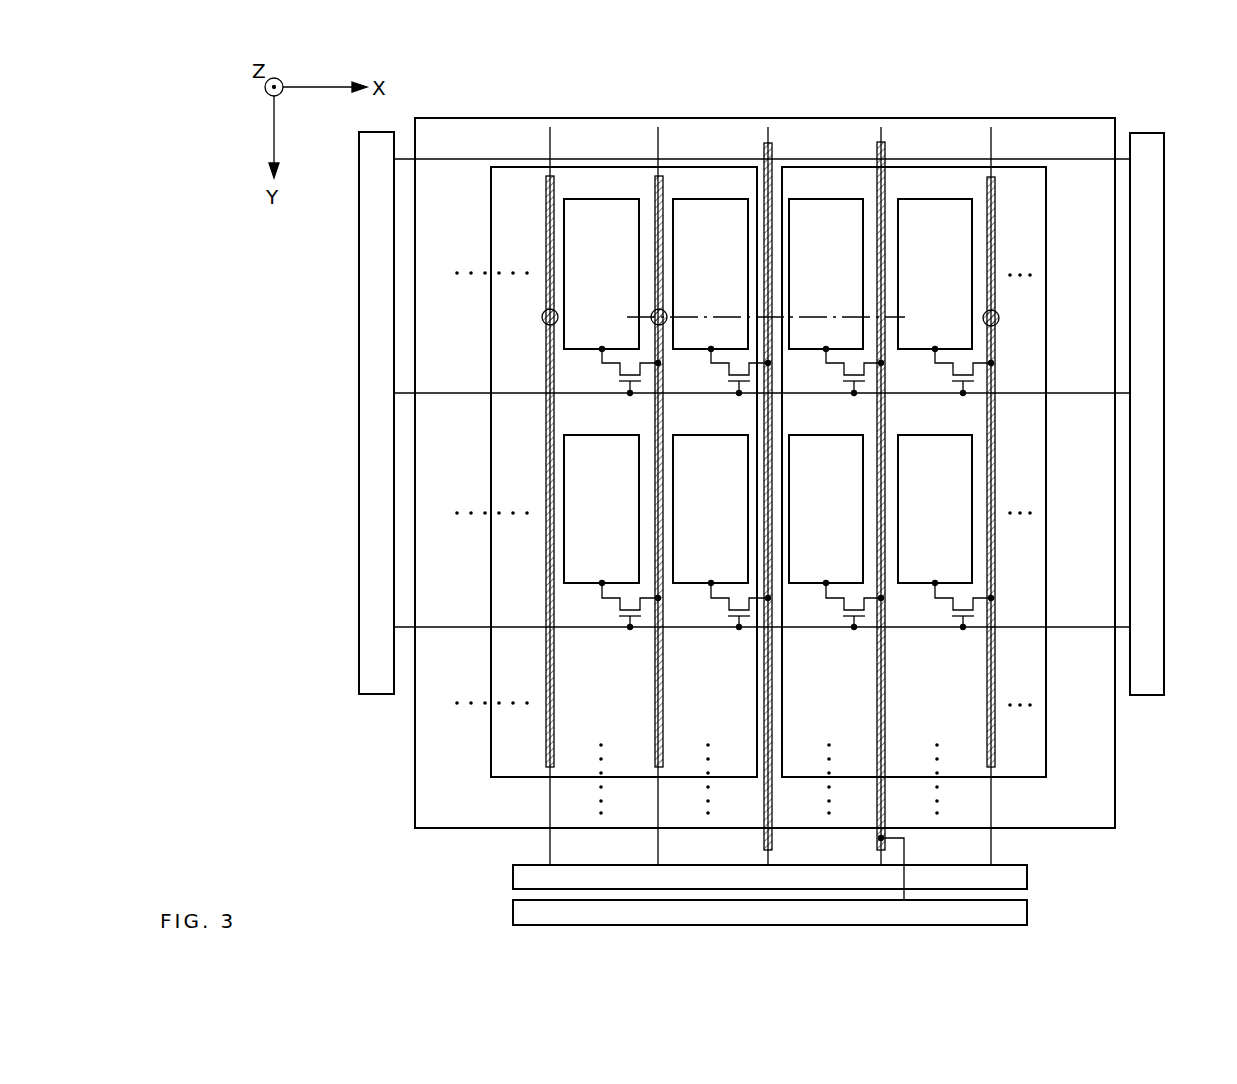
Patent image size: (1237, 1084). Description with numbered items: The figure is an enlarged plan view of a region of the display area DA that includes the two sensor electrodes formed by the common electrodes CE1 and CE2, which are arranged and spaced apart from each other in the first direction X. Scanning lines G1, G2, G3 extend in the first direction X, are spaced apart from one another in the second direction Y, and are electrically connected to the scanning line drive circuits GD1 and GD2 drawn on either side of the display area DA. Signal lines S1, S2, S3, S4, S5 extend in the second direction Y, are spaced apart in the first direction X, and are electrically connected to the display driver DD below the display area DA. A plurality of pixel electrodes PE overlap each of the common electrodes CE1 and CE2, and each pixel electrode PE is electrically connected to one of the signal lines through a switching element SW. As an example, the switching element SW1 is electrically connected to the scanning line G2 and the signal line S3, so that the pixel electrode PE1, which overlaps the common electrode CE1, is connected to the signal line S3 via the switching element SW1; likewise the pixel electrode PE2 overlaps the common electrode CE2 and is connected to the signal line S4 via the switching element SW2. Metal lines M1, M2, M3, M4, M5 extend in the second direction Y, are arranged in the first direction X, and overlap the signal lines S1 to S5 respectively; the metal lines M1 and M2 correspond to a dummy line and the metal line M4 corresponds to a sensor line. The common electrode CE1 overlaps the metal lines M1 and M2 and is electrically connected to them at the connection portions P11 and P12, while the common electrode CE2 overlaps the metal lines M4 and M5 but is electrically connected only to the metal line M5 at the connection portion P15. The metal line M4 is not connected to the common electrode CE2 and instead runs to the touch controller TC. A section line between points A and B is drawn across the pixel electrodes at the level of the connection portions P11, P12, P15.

The display area DA is at (1117, 119).
The scanning line drive circuit GD1 is at (359, 428).
The scanning line drive circuit GD2 is at (1164, 428).
The scanning line G1 is at (455, 160).
The scanning line G2 is at (464, 394).
The scanning line G3 is at (453, 628).
The common electrode CE1 is at (491, 735).
The common electrode CE2 is at (1046, 688).
The signal line S1 is at (550, 850).
The signal line S2 is at (658, 850).
The signal line S3 is at (768, 858).
The signal line S4 is at (881, 858).
The signal line S5 is at (991, 850).
The metal line M1 is at (548, 183).
The metal line M2 is at (657, 185).
The metal line M3 is at (766, 150).
The metal line M4 is at (886, 190).
The metal line M5 is at (989, 190).
The pixel electrode PE1 is at (728, 199).
The pixel electrode PE2 is at (840, 199).
The pixel electrode PE is at (608, 435).
The switching element SW1 is at (728, 370).
The switching element SW2 is at (843, 370).
The switching element SW is at (616, 606).
The connection portion P11 is at (545, 323).
The connection portion P12 is at (664, 311).
The connection portion P15 is at (997, 324).
The section line end A is at (755, 318).
The section line end B is at (915, 318).
The display driver DD is at (513, 880).
The touch controller TC is at (513, 915).